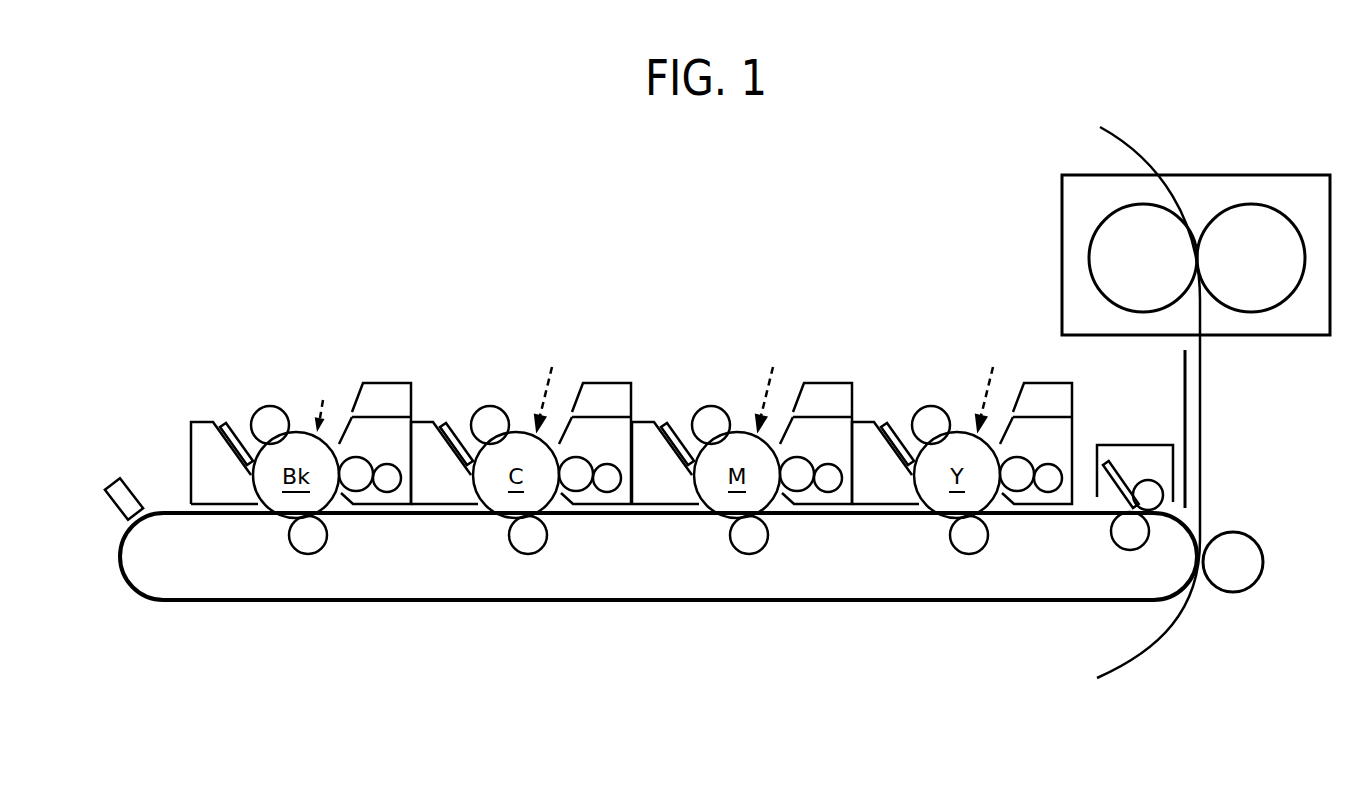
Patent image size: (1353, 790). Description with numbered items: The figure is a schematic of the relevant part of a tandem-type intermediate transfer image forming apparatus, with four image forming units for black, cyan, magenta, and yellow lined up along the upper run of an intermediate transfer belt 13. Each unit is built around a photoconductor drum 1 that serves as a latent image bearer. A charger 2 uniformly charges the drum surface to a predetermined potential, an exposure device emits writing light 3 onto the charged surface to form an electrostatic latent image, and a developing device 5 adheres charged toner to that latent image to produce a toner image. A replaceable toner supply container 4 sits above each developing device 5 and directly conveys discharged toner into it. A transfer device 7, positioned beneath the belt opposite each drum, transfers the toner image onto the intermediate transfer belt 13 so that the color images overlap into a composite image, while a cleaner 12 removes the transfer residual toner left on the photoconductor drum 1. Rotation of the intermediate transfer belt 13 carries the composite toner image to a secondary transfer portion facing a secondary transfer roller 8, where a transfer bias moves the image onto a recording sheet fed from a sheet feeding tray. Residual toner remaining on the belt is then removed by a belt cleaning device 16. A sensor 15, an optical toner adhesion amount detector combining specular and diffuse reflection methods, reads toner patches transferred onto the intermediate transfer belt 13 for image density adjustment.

The photoconductor drum 1 is at (238, 438).
The charger 2 is at (253, 440).
The writing light 3 is at (327, 397).
The toner supply container 4 is at (387, 382).
The developing device 5 is at (415, 415).
The transfer device 7 is at (327, 543).
The secondary transfer roller 8 is at (1233, 533).
The cleaner 12 is at (190, 440).
The intermediate transfer belt 13 is at (223, 520).
The sensor 15 is at (113, 482).
The belt cleaning device 16 is at (1142, 445).